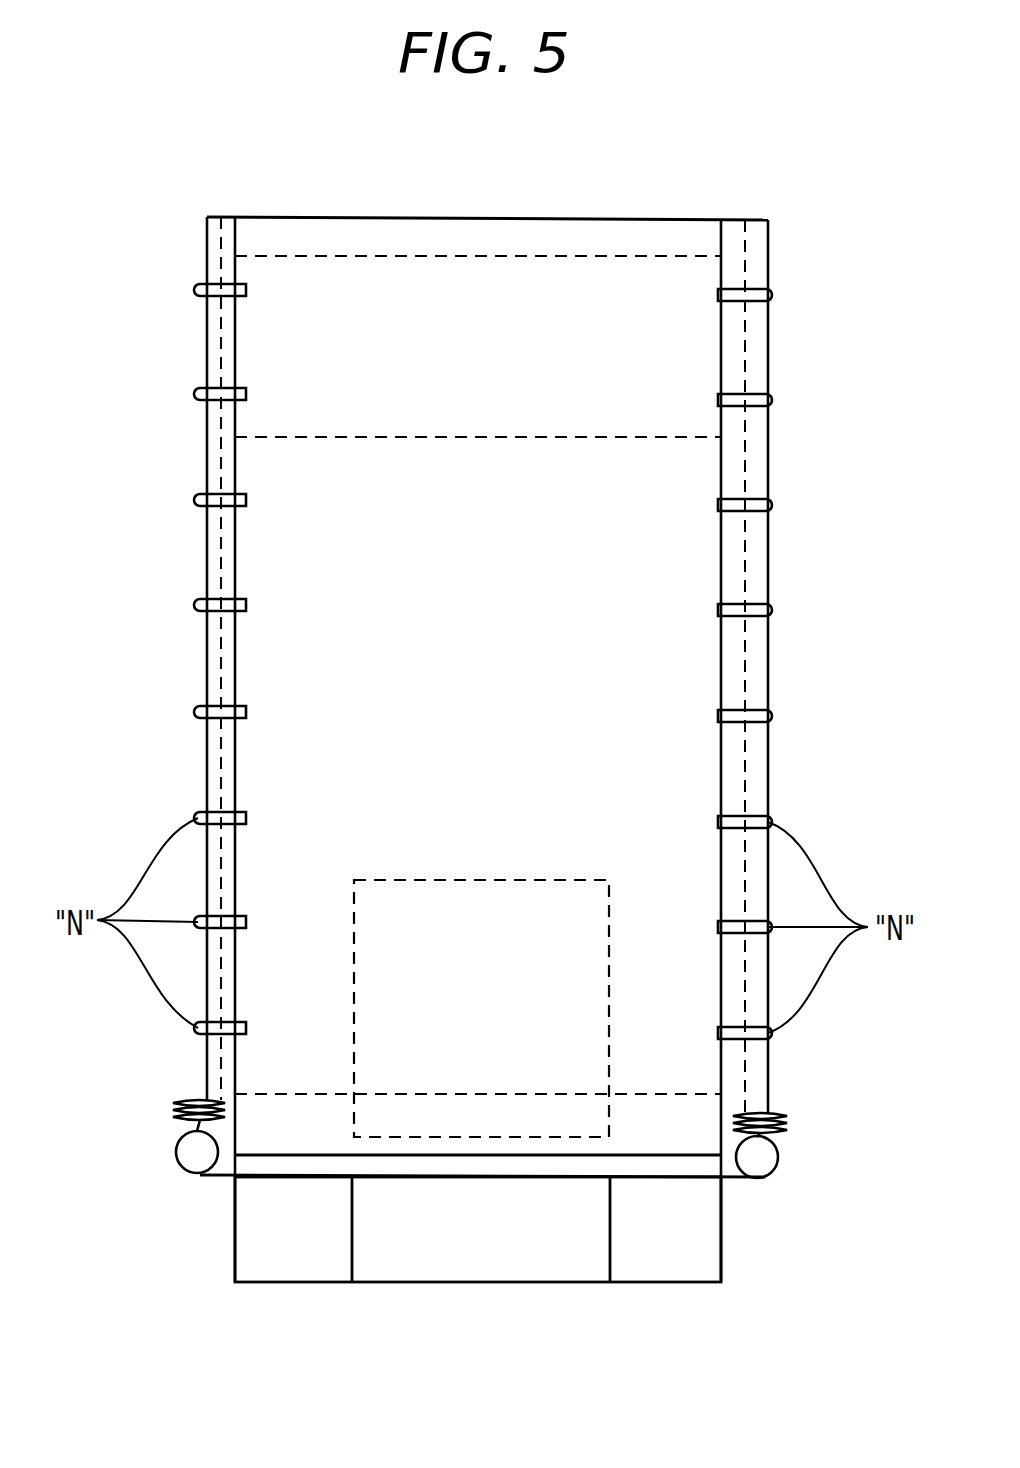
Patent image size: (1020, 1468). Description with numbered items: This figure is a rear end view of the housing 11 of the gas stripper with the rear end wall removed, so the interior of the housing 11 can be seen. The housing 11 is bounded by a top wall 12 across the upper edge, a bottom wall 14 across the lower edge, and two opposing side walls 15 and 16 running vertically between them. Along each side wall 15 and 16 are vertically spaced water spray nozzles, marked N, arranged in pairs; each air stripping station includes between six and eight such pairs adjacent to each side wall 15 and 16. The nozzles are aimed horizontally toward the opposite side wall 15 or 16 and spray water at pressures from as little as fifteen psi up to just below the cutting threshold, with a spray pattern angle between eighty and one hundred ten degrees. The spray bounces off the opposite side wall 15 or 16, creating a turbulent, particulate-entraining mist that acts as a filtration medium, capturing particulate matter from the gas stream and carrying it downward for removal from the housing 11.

The housing 11 is at (128, 246).
The top wall 12 is at (485, 217).
The bottom wall 14 is at (284, 1150).
The side wall 15 is at (234, 651).
The side wall 16 is at (722, 545).